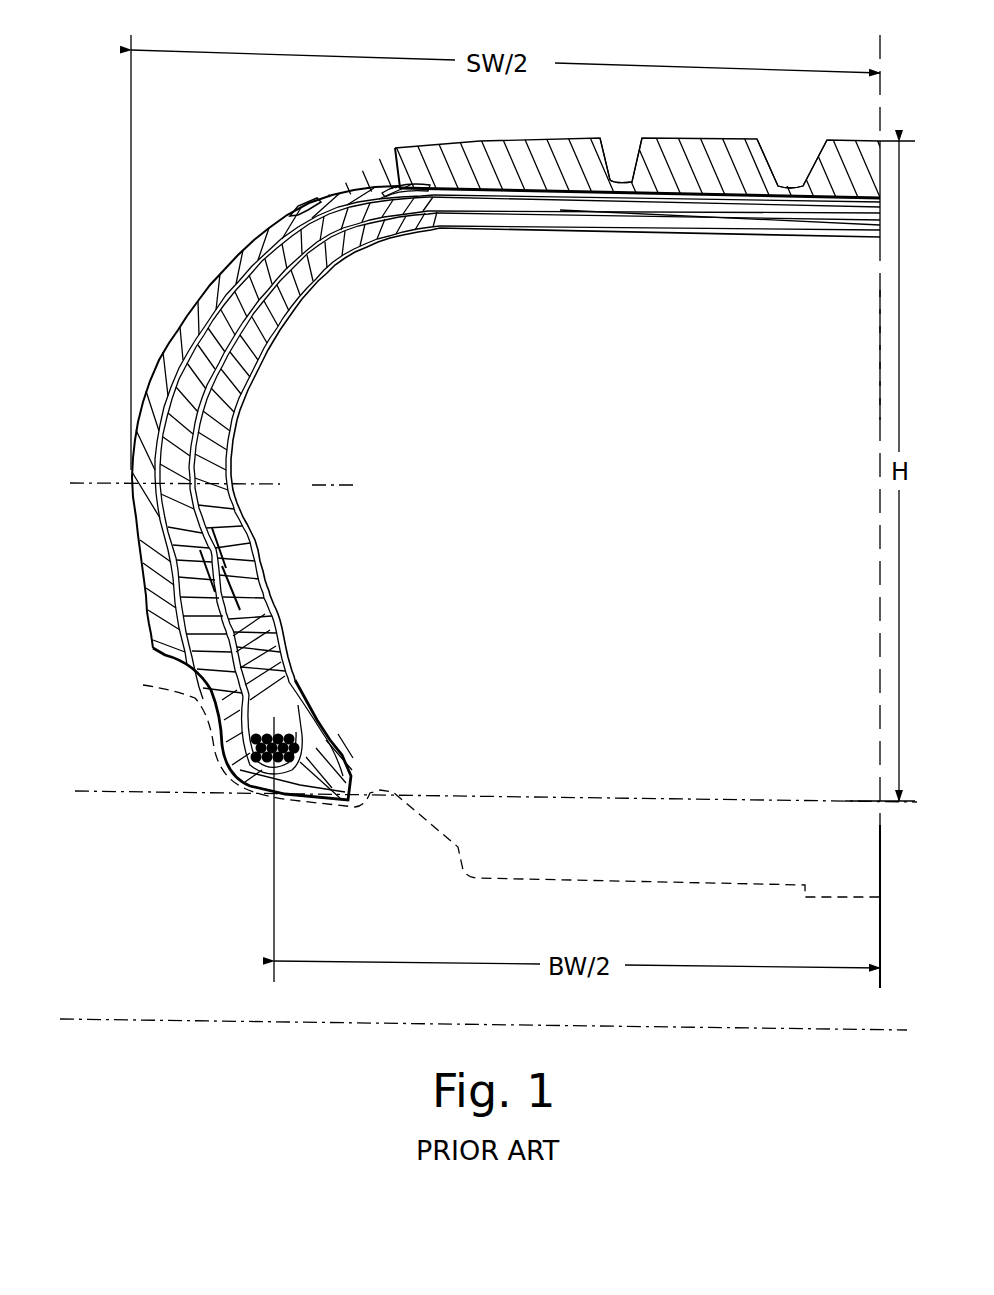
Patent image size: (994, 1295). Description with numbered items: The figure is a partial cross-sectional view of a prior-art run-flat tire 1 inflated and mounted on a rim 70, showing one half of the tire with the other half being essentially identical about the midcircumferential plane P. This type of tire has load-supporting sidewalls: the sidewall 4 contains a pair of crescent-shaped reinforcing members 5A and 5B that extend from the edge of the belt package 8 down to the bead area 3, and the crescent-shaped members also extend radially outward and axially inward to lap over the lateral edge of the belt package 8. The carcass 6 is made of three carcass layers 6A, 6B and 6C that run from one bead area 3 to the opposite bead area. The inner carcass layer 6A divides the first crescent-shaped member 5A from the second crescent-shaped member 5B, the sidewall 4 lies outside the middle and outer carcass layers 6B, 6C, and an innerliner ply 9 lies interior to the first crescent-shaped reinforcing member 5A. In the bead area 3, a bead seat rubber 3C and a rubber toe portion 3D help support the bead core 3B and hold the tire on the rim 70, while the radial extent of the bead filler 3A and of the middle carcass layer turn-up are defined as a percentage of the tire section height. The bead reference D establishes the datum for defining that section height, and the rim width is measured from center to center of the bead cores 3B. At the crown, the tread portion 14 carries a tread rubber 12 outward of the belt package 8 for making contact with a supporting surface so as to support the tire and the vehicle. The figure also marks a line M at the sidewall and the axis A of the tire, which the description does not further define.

The tire 1 is at (235, 172).
The bead area 3 is at (337, 715).
The bead filler 3A is at (253, 668).
The bead core 3B is at (310, 800).
The bead seat rubber 3C is at (210, 737).
The rubber toe portion 3D is at (327, 768).
The sidewall 4 is at (233, 265).
The first crescent-shaped reinforcing member 5A is at (330, 268).
The second crescent-shaped reinforcing member 5B is at (217, 340).
The carcass 6 is at (585, 229).
The inner carcass layer 6A is at (220, 538).
The middle carcass layer 6B is at (203, 560).
The outer carcass layer 6C is at (225, 575).
The belt package 8 is at (392, 180).
The innerliner ply 9 is at (300, 322).
The tread rubber 12 is at (695, 163).
The tread portion 14 is at (535, 134).
The rim 70 is at (475, 838).
The maximum width line M is at (293, 482).
The midcircumferential plane P is at (868, 380).
The bead reference D is at (498, 792).
The rotational axis A is at (140, 1020).